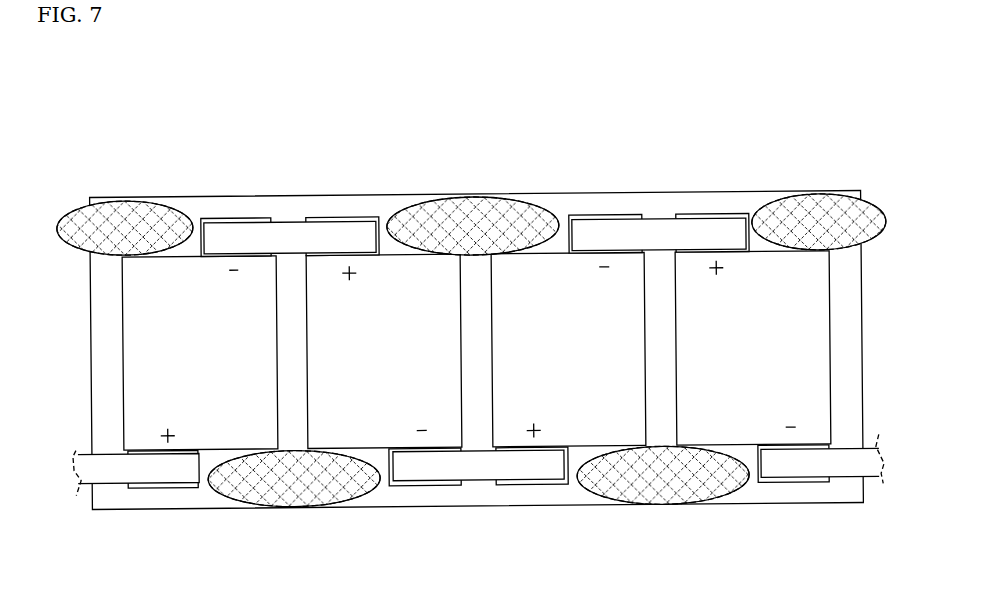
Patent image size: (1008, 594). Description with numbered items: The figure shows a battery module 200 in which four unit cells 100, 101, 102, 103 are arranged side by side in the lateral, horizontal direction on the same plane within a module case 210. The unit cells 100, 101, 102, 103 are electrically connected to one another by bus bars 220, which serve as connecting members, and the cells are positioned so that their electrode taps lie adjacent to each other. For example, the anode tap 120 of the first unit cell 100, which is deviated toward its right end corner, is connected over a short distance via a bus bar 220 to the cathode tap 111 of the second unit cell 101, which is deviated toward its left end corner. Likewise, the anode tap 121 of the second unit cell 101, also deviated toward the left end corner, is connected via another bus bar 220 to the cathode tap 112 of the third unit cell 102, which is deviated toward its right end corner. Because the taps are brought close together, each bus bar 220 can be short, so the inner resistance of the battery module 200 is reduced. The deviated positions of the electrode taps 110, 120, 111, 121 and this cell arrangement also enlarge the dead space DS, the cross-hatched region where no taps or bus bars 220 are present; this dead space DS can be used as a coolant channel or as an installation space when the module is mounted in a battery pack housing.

The battery module 200 is at (83, 71).
The module case 210 is at (663, 194).
The bus bar 220 is at (278, 235).
The first unit cell 100 is at (200, 353).
The second unit cell 101 is at (384, 351).
The third unit cell 102 is at (568, 349).
The fourth unit cell 103 is at (753, 348).
The electrode tap 110 is at (165, 485).
The cathode tap 111 is at (355, 216).
The cathode tap 112 is at (537, 485).
The anode tap 120 is at (220, 216).
The anode tap 121 is at (428, 485).
The dead space DS is at (487, 215).